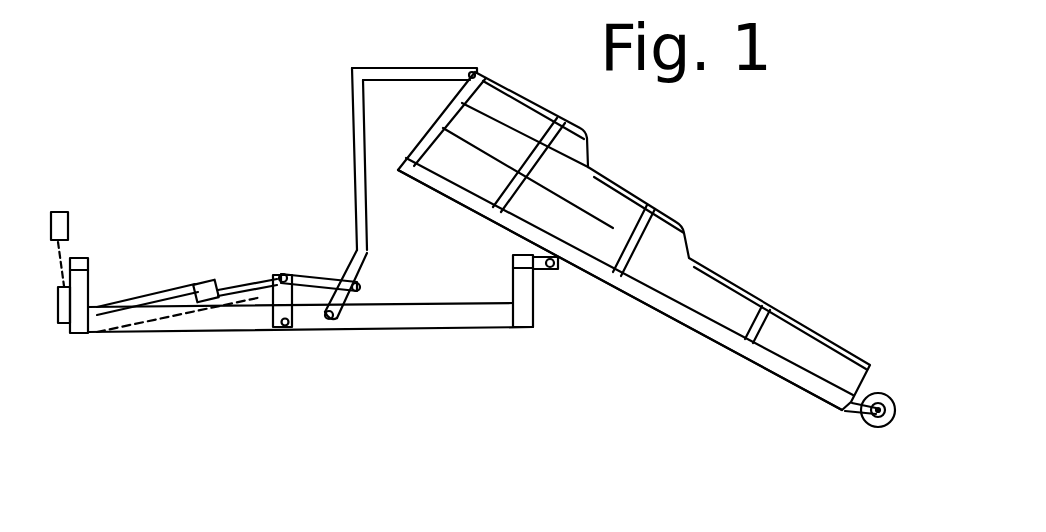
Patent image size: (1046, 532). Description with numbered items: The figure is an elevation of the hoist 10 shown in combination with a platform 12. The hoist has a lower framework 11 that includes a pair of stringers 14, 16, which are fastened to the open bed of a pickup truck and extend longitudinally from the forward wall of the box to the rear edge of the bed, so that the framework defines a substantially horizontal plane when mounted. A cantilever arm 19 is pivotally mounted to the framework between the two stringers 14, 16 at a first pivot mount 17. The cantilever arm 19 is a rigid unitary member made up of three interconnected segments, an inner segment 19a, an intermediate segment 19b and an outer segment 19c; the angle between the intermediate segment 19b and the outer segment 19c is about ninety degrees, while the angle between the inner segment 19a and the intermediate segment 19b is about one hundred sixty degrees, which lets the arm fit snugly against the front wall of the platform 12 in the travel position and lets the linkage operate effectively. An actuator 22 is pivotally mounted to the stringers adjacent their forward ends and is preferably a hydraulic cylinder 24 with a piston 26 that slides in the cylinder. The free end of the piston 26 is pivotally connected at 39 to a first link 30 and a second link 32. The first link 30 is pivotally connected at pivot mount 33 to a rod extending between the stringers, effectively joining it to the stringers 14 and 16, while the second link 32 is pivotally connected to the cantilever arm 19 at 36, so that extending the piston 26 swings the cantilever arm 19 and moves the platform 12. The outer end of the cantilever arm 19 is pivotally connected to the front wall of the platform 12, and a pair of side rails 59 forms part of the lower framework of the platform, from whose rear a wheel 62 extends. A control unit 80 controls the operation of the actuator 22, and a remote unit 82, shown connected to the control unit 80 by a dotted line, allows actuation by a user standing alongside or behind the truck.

The hoist 10 is at (213, 128).
The lower framework 11 is at (187, 323).
The platform 12 is at (646, 280).
The stringer 14 is at (487, 317).
The stringer 16 is at (457, 303).
The first pivot mount 17 is at (320, 320).
The cantilever arm 19 is at (372, 199).
The inner segment 19a is at (362, 260).
The intermediate segment 19b is at (353, 180).
The outer segment 19c is at (422, 70).
The actuator 22 is at (194, 284).
The hydraulic cylinder 24 is at (182, 283).
The piston 26 is at (233, 281).
The first link 30 is at (303, 313).
The second link 32 is at (355, 260).
The pivot mount 33 is at (298, 327).
The pivot connection 36 is at (360, 287).
The pivot connection 39 is at (283, 275).
The side rail 59 is at (685, 325).
The wheel 62 is at (877, 427).
The control unit 80 is at (58, 312).
The remote unit 82 is at (68, 218).